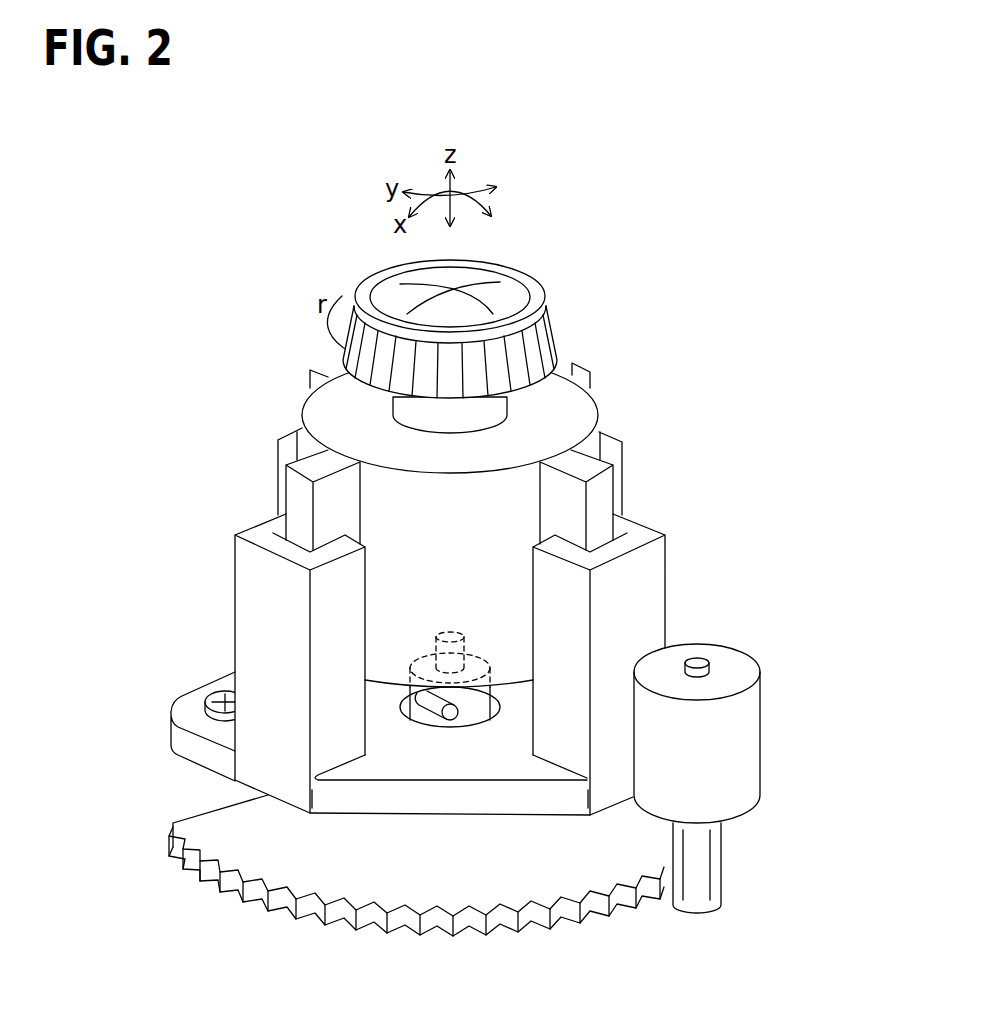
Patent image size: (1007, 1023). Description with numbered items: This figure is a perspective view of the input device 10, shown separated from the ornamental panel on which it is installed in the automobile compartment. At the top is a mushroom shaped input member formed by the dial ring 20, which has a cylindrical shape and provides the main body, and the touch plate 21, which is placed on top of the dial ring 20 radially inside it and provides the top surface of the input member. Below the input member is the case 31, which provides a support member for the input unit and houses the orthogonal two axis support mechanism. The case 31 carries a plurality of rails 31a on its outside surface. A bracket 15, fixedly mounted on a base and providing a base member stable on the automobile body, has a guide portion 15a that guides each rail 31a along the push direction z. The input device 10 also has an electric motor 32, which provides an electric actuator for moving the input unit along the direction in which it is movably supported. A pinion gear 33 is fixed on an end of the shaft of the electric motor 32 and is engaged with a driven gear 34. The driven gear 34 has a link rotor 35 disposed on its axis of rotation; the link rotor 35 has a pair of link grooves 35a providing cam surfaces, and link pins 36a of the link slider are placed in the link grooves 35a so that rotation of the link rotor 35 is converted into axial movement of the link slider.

The input device 10 is at (260, 334).
The bracket 15 is at (193, 687).
The guide portion 15a is at (285, 440).
The dial ring 20 is at (553, 347).
The touch plate 21 is at (510, 293).
The case 31 is at (598, 406).
The rail 31a is at (312, 368).
The electric motor 32 is at (737, 740).
The pinion gear 33 is at (722, 861).
The driven gear 34 is at (573, 917).
The link rotor 35 is at (478, 714).
The link groove 35a is at (427, 722).
The link pin 36a is at (452, 722).